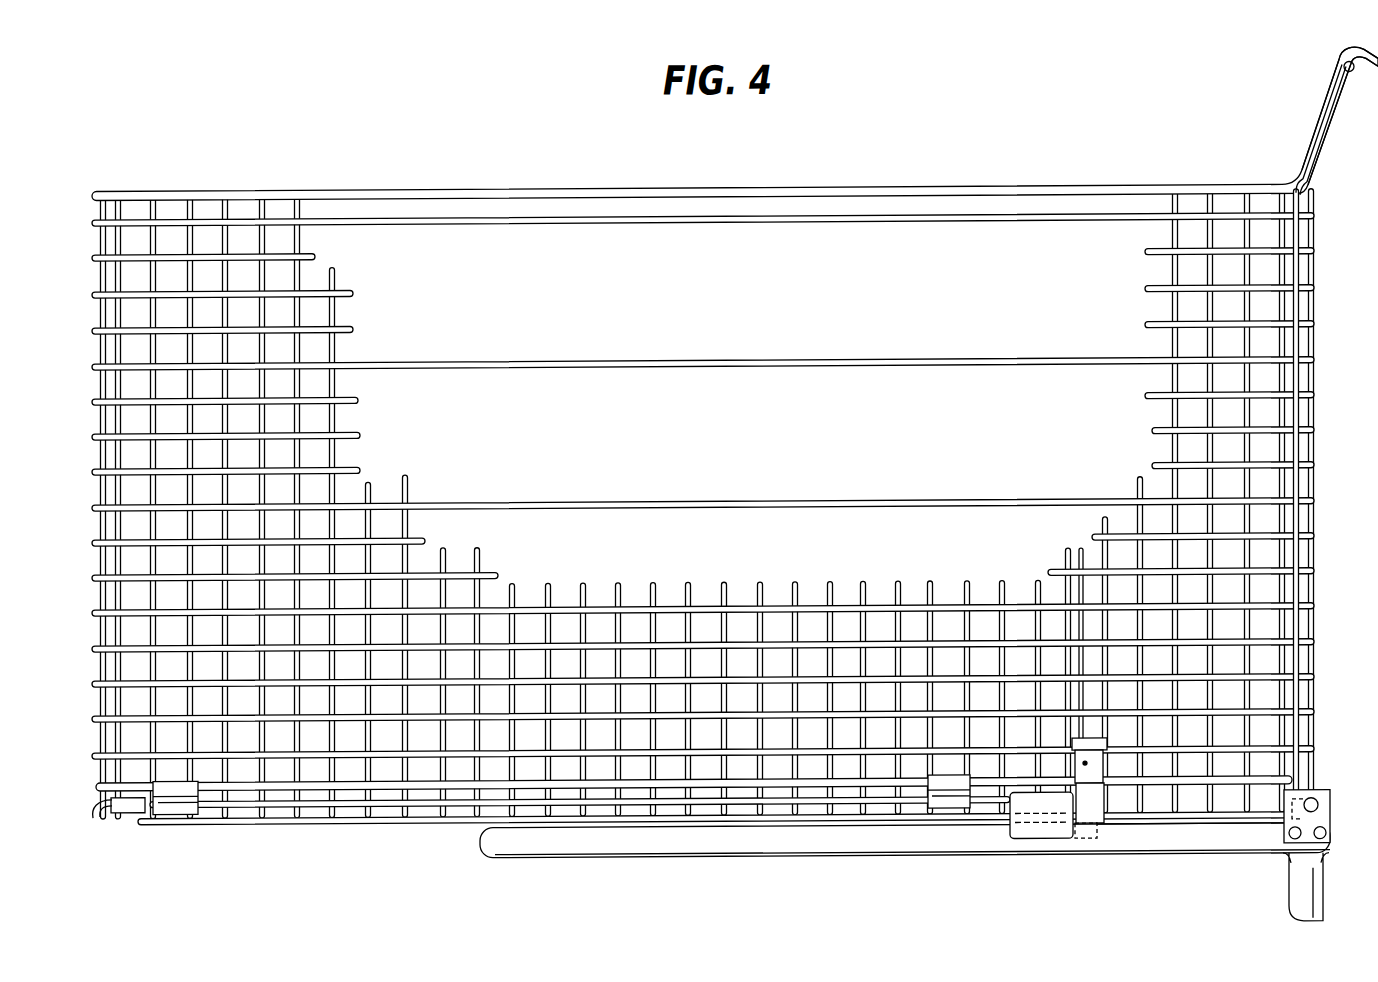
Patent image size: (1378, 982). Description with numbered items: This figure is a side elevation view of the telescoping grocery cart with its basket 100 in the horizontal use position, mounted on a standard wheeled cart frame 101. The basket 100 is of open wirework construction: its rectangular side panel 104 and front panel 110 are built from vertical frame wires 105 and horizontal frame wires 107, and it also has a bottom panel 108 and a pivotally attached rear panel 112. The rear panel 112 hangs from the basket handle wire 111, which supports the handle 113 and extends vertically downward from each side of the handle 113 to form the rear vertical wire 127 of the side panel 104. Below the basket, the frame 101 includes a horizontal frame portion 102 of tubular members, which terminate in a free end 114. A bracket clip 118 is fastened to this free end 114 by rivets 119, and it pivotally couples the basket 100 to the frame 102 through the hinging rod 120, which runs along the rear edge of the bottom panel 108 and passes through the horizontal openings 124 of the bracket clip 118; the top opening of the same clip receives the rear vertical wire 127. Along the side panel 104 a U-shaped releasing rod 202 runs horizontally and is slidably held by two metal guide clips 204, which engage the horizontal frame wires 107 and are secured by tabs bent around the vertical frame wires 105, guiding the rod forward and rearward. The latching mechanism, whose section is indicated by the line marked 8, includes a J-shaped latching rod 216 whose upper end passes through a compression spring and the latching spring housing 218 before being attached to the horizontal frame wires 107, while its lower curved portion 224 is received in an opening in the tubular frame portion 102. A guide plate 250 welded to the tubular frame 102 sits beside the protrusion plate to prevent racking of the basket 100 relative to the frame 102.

The basket 100 is at (856, 188).
The wheeled cart frame 101 is at (1325, 912).
The horizontal frame portion 102 is at (657, 845).
The side panel 104 is at (273, 223).
The vertical frame wires 105 is at (300, 424).
The horizontal frame wires 107 is at (605, 228).
The bottom panel 108 is at (396, 828).
The front panel 110 is at (112, 486).
The basket handle wire 111 is at (1325, 117).
The rear panel 112 is at (1337, 67).
The handle 113 is at (1372, 59).
The free end 114 is at (1193, 846).
The bracket clip 118 is at (1288, 838).
The rivets 119 is at (1328, 840).
The hinging rod 120 is at (1333, 810).
The horizontal openings 124 is at (1318, 805).
The rear vertical wire 127 is at (1312, 603).
The releasing rod 202 is at (432, 802).
The guide clips 204 is at (176, 805).
The latching rod 216 is at (1095, 669).
The latching spring housing 218 is at (1097, 801).
The lower curved portion 224 is at (1095, 846).
The guide plates 250 is at (1020, 837).
The section line 8- 8 is at (960, 767).